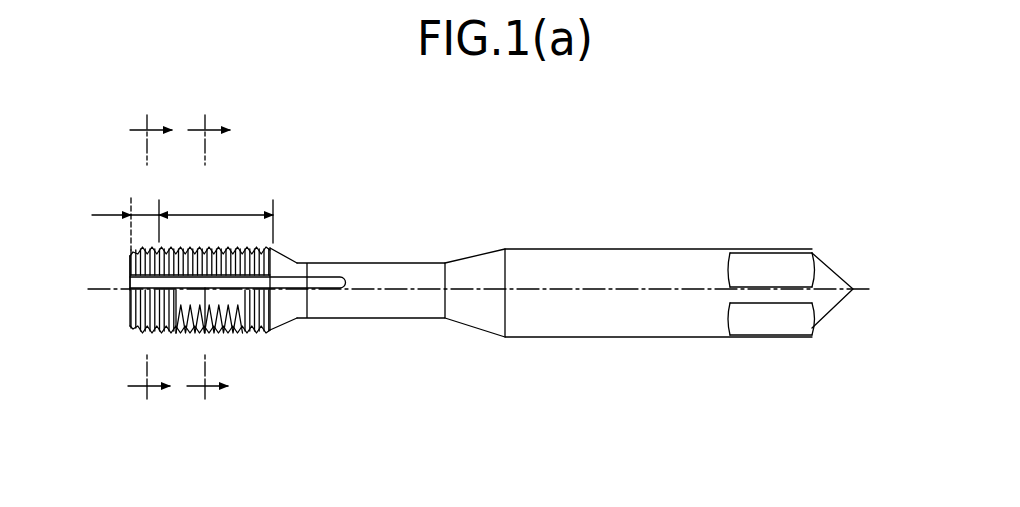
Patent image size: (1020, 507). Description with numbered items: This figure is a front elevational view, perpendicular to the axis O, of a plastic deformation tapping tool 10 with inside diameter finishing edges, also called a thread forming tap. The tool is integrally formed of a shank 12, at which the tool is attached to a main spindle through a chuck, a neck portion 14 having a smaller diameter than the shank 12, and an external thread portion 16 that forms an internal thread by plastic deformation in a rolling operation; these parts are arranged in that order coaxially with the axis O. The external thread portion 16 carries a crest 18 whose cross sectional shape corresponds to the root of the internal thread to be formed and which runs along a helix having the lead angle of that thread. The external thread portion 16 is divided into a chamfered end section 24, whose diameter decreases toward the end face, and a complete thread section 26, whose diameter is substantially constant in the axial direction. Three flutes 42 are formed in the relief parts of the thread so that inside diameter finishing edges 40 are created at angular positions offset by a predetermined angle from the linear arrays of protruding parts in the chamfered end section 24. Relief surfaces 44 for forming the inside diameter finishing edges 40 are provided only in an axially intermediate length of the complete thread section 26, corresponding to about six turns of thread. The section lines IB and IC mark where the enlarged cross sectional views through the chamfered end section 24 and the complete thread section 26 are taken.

The plastic deformation tapping tool 10 is at (595, 153).
The shank 12 is at (598, 263).
The neck portion 14 is at (387, 277).
The external thread portion 16 is at (235, 317).
The crest 18 is at (237, 257).
The chamfered end section 24 is at (125, 215).
The complete thread section 26 is at (216, 216).
The inside diameter finishing edges 40 is at (207, 280).
The flutes 42 is at (130, 285).
The relief surfaces 44 is at (183, 300).
The axis O is at (465, 289).
The line IB- IB is at (151, 259).
The line IC- IC is at (209, 259).